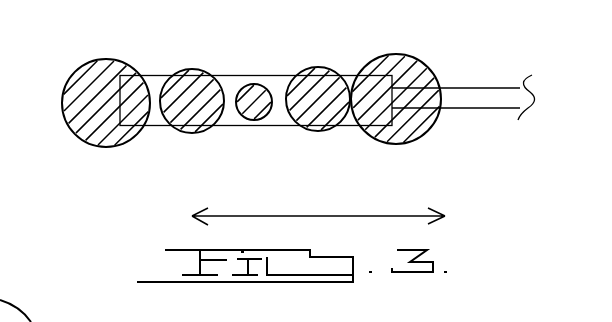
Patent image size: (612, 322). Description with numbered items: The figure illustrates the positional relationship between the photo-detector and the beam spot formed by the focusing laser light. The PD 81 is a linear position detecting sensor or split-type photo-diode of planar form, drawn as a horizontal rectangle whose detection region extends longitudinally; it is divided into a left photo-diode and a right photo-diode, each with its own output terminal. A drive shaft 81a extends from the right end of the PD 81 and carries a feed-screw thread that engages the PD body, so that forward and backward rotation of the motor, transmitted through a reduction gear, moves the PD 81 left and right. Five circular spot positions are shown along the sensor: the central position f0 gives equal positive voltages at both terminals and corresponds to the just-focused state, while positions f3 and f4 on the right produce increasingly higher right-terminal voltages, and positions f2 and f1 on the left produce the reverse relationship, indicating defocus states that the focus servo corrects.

The PD 81 is at (226, 128).
The drive shaft 81a is at (465, 110).
The beam spot position f1 is at (100, 77).
The beam spot position f2 is at (187, 83).
The central position f0 is at (250, 93).
The beam spot position f3 is at (310, 87).
The beam spot position f4 is at (407, 70).